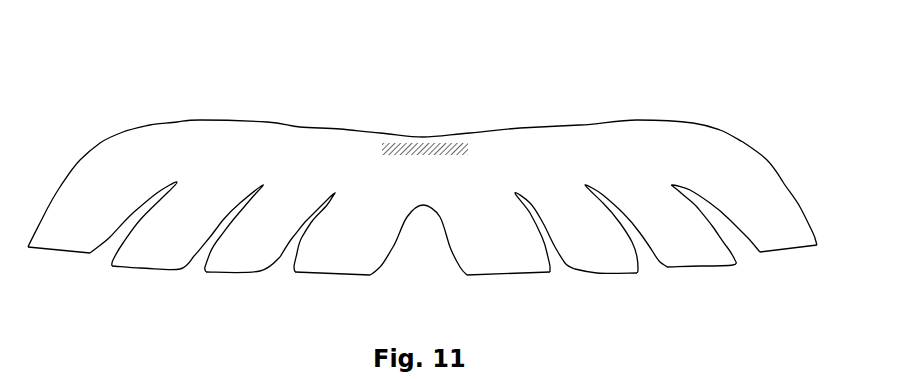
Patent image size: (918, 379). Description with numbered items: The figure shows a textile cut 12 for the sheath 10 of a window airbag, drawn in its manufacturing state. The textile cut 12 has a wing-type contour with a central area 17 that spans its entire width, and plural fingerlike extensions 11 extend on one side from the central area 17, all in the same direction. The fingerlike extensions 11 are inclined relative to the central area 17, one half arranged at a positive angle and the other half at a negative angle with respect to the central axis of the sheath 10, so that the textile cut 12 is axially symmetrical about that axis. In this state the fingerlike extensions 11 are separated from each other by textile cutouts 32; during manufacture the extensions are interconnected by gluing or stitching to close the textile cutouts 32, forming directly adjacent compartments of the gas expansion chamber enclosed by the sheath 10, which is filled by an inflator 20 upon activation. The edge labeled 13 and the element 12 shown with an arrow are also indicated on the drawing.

The flexible sheath 10 is at (733, 157).
The fingerlike extensions 11 is at (770, 213).
The textile cut 12 is at (683, 83).
The outer surface edge 13 is at (588, 120).
The central area 17 is at (518, 176).
The inflator 20 is at (447, 143).
The textile cutouts 32 is at (95, 262).